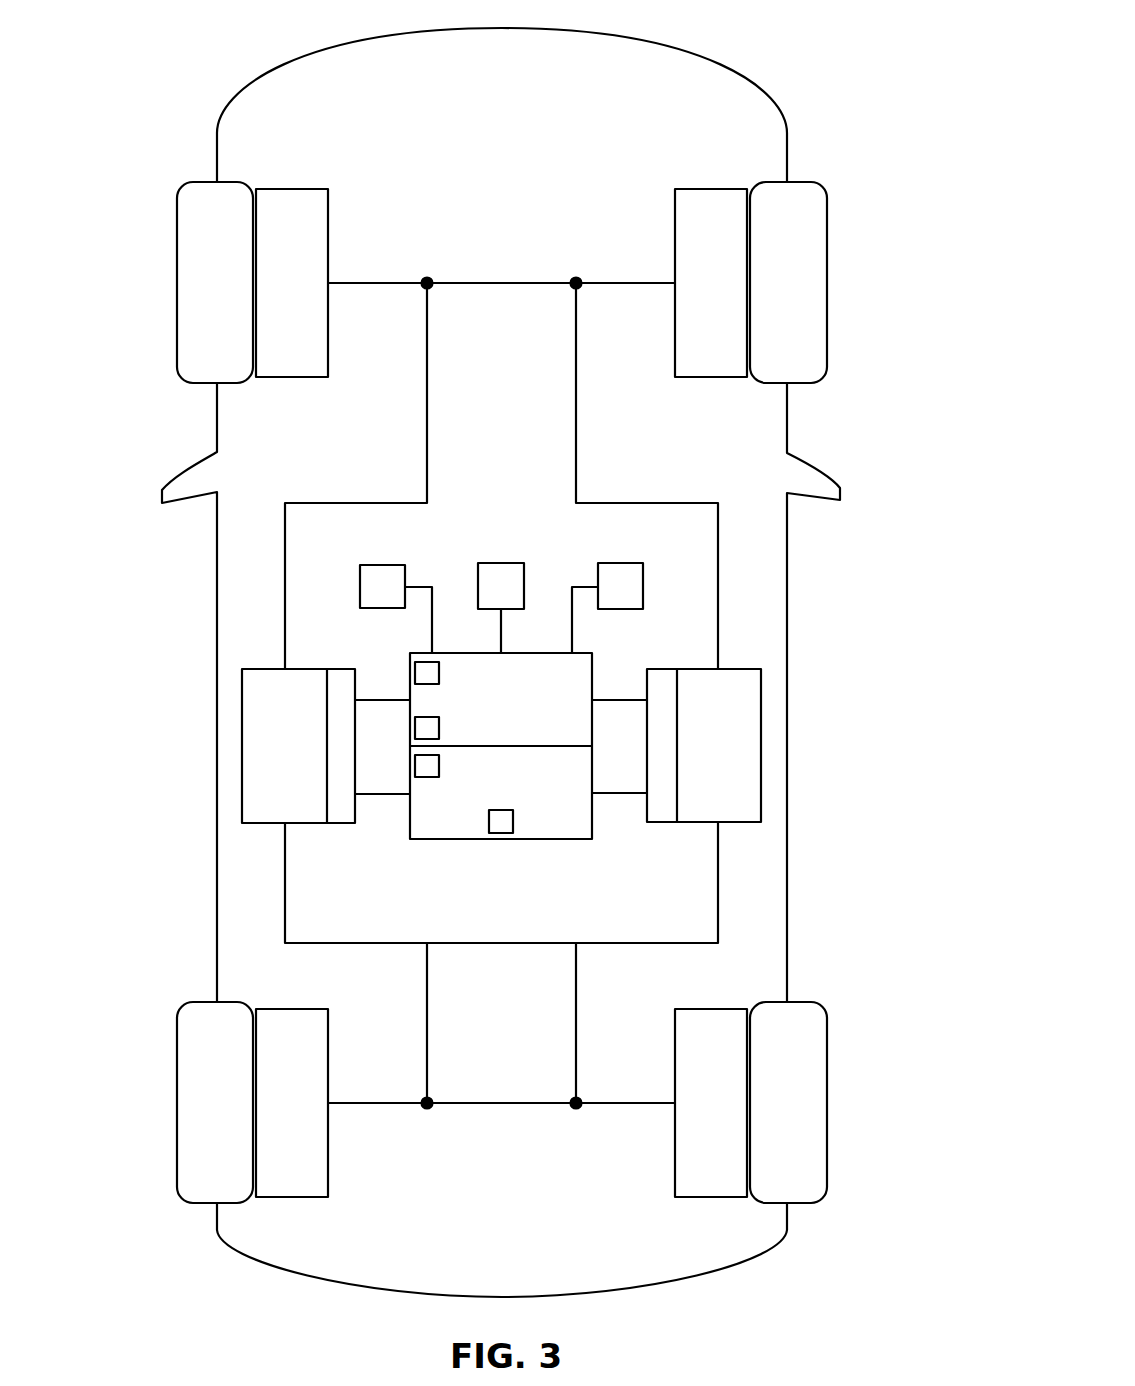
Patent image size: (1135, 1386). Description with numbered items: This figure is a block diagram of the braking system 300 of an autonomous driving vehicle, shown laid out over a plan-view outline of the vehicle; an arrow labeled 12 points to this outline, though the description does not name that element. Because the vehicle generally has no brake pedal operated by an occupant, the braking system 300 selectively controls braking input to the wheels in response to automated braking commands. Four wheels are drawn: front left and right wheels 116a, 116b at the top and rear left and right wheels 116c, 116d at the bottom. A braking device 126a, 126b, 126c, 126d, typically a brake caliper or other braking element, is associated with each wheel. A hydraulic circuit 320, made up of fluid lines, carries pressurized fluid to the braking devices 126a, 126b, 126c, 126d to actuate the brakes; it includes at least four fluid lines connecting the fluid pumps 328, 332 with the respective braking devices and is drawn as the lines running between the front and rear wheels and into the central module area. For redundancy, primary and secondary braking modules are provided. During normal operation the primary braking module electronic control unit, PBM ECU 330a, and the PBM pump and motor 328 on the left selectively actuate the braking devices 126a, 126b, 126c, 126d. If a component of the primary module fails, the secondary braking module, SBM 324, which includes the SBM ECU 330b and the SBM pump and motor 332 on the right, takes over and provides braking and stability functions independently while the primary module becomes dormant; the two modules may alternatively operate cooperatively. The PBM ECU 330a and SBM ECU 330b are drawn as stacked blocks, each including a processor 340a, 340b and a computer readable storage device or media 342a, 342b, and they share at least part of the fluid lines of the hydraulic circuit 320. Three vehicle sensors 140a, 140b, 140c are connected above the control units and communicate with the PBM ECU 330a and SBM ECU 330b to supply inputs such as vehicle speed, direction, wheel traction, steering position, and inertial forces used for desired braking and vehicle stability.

The braking system 300 is at (744, 28).
The vehicle body / frame 12 is at (767, 605).
The front left wheel 116a is at (177, 283).
The front right wheel 116b is at (827, 283).
The rear left wheel 116c is at (177, 1100).
The rear right wheel 116d is at (827, 1100).
The braking device 126a is at (290, 189).
The braking device 126b is at (713, 189).
The braking device 126c is at (290, 1197).
The braking device 126d is at (713, 1196).
The hydraulic circuit 320 is at (488, 276).
The secondary braking module 324 is at (622, 895).
The PBM pump and motor 328 is at (242, 747).
The SBM pump and motor 332 is at (761, 747).
The primary braking module electronic control unit 330a is at (592, 668).
The secondary braking module electronic control unit 330b is at (447, 839).
The processor 340a is at (415, 728).
The processor 340b is at (428, 777).
The computer readable storage device or media 342a is at (415, 672).
The computer readable storage device or media 342b is at (500, 833).
The vehicle sensor 140a is at (382, 565).
The vehicle sensor 140b is at (501, 563).
The vehicle sensor 140c is at (620, 563).